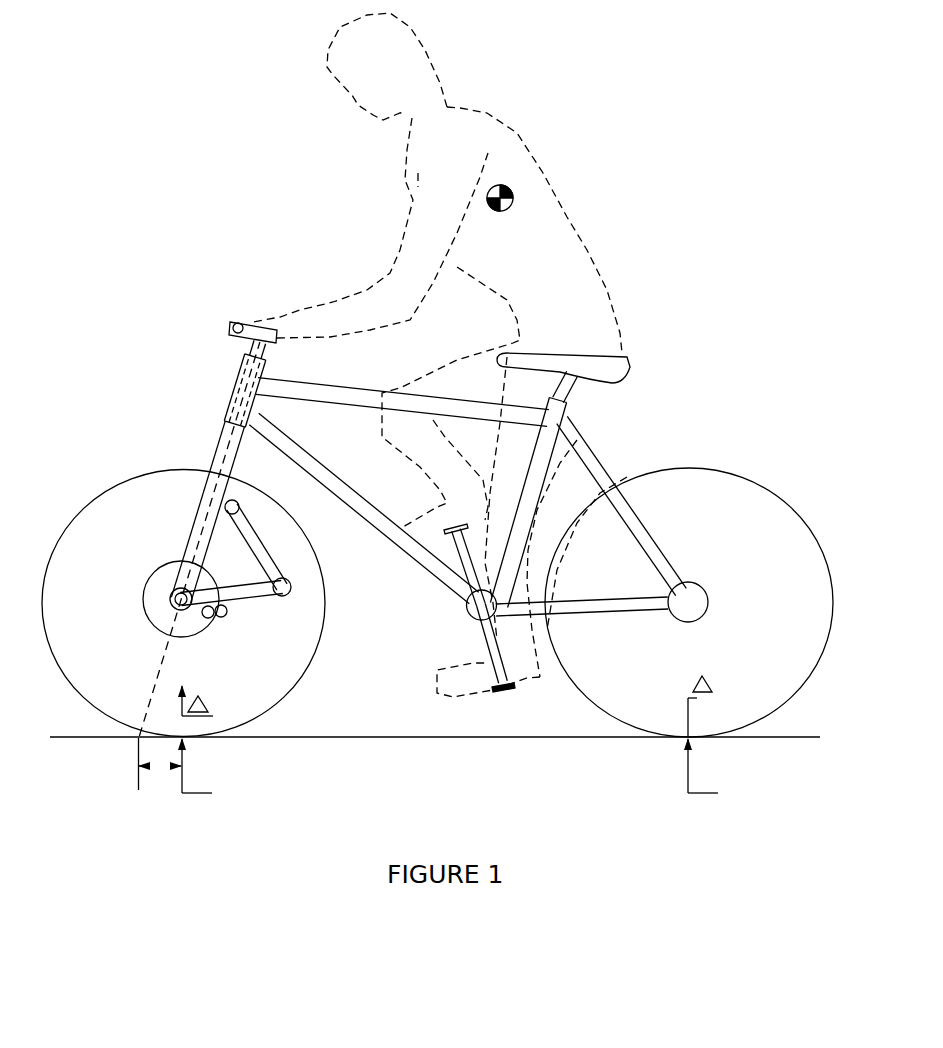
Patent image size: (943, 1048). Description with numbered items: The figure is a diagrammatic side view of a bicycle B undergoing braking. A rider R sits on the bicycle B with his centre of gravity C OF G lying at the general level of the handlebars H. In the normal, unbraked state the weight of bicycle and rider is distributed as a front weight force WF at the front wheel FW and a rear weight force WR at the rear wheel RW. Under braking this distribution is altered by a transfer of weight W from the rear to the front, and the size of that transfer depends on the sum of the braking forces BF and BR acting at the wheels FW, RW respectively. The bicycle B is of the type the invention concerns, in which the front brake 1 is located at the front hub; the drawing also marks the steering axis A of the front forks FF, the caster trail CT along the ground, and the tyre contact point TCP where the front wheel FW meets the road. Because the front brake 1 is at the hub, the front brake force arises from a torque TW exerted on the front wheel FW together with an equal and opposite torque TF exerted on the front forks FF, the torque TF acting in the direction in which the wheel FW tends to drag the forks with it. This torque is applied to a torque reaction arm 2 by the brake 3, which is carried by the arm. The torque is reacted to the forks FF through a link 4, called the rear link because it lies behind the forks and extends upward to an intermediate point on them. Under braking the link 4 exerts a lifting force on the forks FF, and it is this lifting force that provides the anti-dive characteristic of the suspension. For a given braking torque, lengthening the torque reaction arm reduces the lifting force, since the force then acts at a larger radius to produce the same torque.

The front brake 1 is at (208, 629).
The torque reaction arm 2 is at (308, 608).
The brake 3 is at (229, 616).
The rear link 4 is at (266, 547).
The handlebars H is at (233, 321).
The front wheel FW is at (123, 481).
The rear wheel RW is at (822, 471).
The front forks FF is at (215, 455).
The bicycle B is at (594, 453).
The rider R is at (565, 206).
The centre of gravity C OF G is at (511, 190).
The torque on the front forks TF is at (222, 576).
The torque on the front wheel TW is at (181, 652).
The steering axis A is at (157, 679).
The weight transfer W is at (461, 705).
The front braking force BF is at (165, 752).
The rear braking force BR is at (675, 752).
The front weight force WF is at (202, 766).
The rear weight force WR is at (710, 767).
The caster trail CT is at (160, 765).
The tire contact point TCP is at (188, 739).